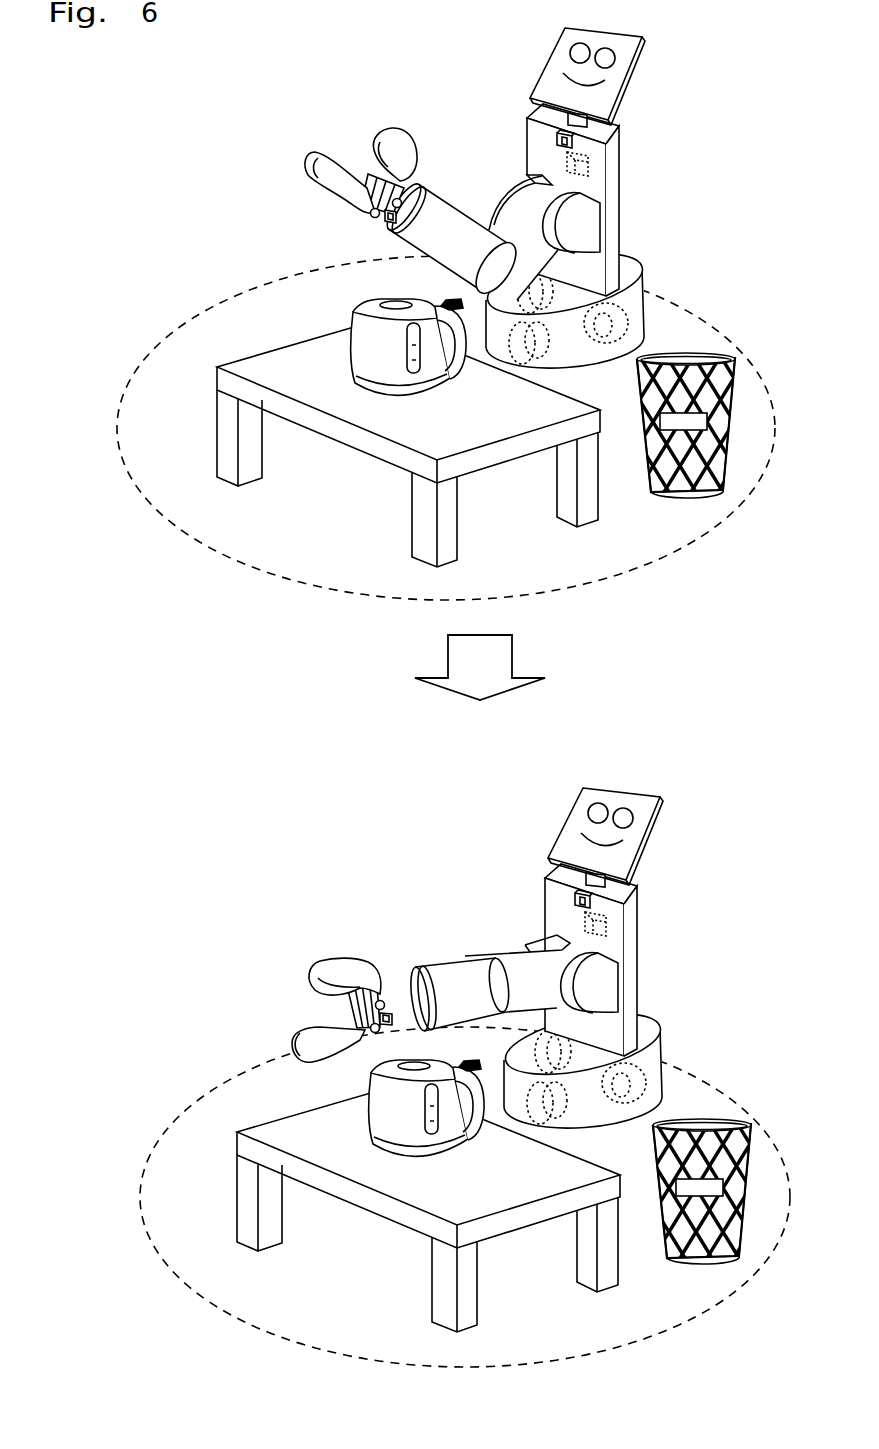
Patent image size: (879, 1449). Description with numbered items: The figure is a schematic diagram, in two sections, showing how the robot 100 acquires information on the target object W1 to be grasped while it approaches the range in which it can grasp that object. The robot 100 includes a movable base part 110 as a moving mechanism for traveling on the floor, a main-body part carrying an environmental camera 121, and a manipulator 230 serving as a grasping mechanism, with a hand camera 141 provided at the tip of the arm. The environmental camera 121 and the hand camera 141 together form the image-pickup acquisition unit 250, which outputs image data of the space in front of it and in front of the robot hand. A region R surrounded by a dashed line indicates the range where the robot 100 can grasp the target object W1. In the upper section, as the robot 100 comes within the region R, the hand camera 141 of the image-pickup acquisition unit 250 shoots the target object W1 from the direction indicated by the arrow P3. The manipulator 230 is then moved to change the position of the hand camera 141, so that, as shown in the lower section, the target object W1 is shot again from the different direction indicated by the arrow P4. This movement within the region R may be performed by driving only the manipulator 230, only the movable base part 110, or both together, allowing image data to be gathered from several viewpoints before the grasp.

The robot 100 is at (527, 578).
The movable base part 110 is at (630, 270).
The environmental camera 121 is at (561, 139).
The hand camera 141 is at (389, 212).
The manipulator 230 is at (467, 230).
The image-pickup acquisition unit 250 is at (467, 530).
The arrow P3 is at (389, 224).
The arrow P4 is at (391, 1021).
The region R is at (740, 354).
The target object to be grasped W1 is at (366, 352).